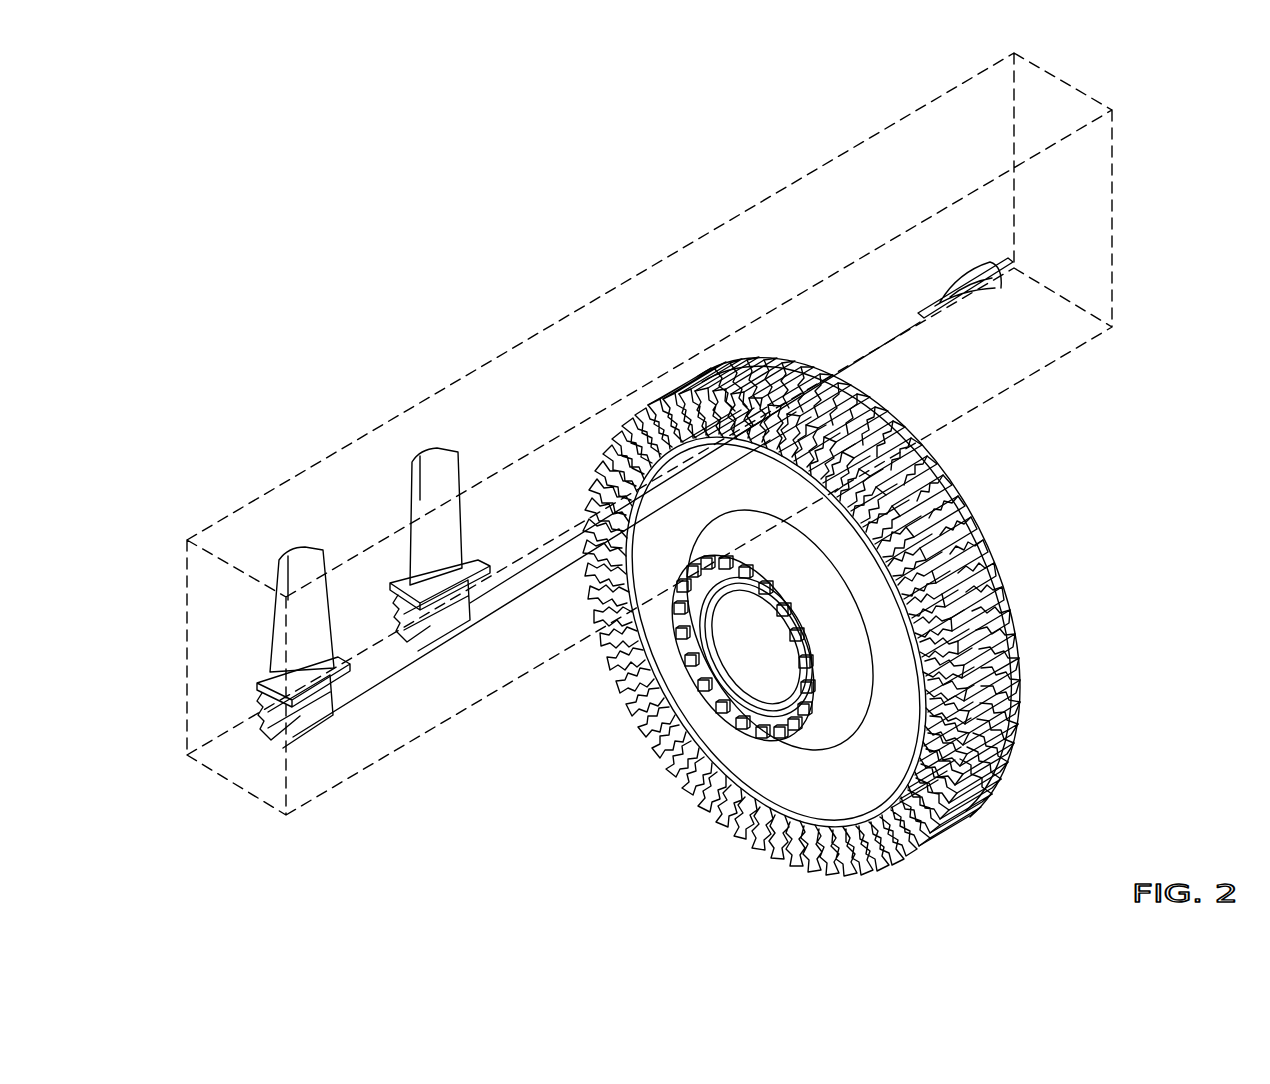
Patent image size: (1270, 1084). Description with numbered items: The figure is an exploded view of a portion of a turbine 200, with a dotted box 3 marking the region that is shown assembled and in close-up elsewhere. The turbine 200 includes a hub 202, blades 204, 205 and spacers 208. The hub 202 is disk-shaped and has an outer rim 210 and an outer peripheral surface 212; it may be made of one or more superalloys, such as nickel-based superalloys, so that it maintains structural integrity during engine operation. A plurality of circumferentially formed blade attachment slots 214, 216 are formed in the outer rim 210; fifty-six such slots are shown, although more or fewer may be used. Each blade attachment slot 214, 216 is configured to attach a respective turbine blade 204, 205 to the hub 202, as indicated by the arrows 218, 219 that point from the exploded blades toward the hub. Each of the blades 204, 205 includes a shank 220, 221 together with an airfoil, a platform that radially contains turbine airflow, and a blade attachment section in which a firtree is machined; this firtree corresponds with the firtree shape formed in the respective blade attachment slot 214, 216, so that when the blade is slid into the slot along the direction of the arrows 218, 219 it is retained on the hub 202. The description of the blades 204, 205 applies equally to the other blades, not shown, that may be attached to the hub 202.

The dotted box 3 is at (767, 195).
The turbine 200 is at (1133, 431).
The hub 202 is at (852, 690).
The blade 204 is at (303, 610).
The blade 205 is at (430, 488).
The spacers 208 is at (950, 282).
The outer rim 210 is at (872, 598).
The outer peripheral surface 212 is at (960, 640).
The blade attachment slot 214 is at (772, 437).
The blade attachment slot 216 is at (757, 440).
The arrow 218 is at (555, 555).
The arrow 219 is at (380, 680).
The shank 220 is at (256, 690).
The shank 221 is at (443, 597).